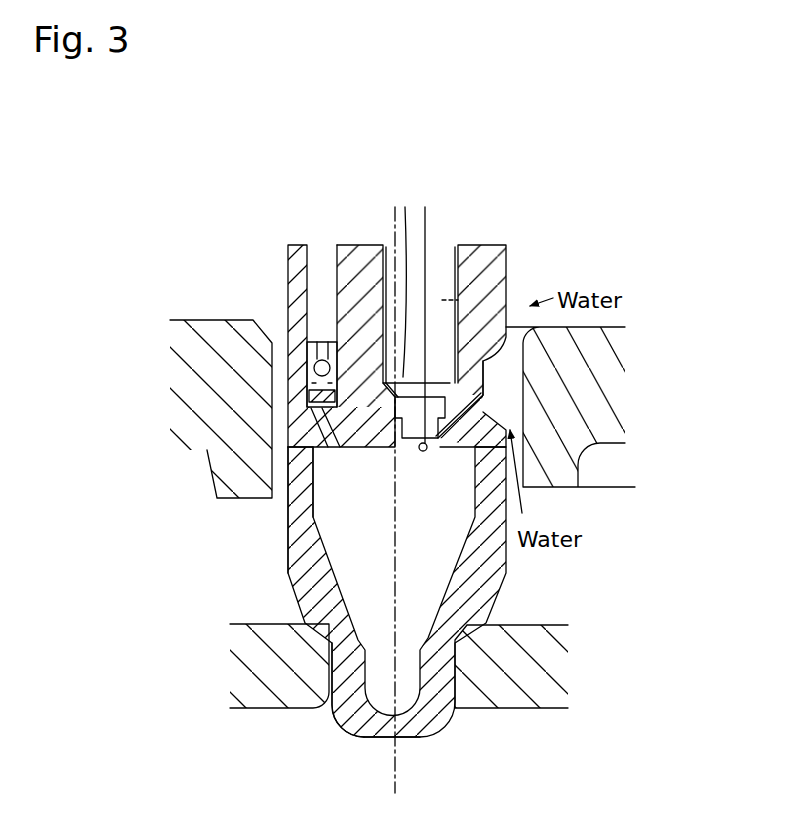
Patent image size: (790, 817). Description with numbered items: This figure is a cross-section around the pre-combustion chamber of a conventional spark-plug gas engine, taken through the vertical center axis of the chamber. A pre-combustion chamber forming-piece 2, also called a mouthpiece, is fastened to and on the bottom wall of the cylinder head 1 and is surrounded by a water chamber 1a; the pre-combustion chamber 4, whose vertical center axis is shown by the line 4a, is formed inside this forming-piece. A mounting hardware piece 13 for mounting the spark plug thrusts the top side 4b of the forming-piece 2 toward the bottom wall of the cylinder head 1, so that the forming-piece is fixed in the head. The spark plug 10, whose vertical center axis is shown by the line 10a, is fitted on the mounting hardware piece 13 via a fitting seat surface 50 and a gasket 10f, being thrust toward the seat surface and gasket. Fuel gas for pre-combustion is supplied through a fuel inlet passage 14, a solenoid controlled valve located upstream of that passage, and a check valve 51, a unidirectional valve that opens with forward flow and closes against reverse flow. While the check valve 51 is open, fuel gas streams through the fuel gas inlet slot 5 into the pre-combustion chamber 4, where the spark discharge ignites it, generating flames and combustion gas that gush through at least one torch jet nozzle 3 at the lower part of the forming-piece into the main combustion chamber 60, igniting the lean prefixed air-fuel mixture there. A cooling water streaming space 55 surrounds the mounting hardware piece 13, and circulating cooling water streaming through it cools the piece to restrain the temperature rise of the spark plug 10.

The cylinder head 1 is at (547, 664).
The water chamber 1a is at (576, 596).
The pre-combustion chamber forming-piece 2 is at (412, 733).
The torch jet nozzle 3 is at (348, 728).
The pre-combustion chamber 4 is at (360, 549).
The center axis of the pre-combustion chamber 4a is at (395, 577).
The top side of the pre-combustion chamber forming-piece 4b is at (358, 455).
The fuel gas inlet slot 5 is at (335, 415).
The spark plug 10 is at (507, 272).
The vertical center axis of the spark plug 10a is at (428, 262).
The gasket 10f is at (486, 395).
The mounting hardware piece 13 is at (490, 260).
The fuel inlet passage 14 is at (313, 290).
The fitting seat surface 50 is at (413, 277).
The check valve 51 is at (303, 385).
The cooling water streaming space 55 is at (445, 418).
The main combustion chamber 60 is at (224, 802).